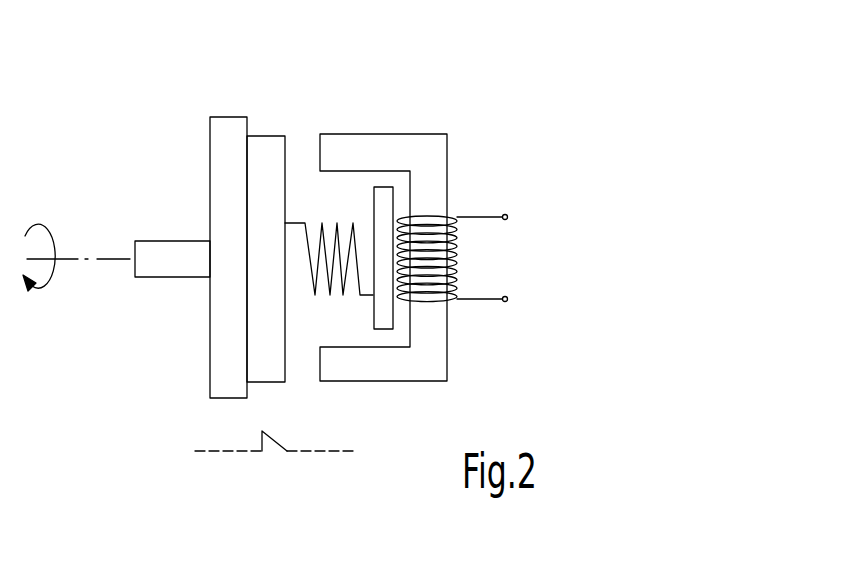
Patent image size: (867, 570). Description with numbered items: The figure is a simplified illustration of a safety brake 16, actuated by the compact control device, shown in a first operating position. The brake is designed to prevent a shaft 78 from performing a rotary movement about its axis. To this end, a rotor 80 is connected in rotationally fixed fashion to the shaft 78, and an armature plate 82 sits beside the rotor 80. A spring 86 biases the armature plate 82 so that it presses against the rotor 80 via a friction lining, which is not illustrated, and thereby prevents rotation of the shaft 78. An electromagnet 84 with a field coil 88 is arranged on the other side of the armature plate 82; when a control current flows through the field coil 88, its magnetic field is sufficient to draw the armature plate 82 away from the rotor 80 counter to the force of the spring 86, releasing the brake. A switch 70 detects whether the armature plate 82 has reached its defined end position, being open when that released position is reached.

The safety brake 16 is at (540, 137).
The switch 70 is at (265, 453).
The shaft 78 is at (148, 278).
The rotor 80 is at (217, 158).
The armature plate 82 is at (263, 135).
The electromagnet 84 is at (437, 335).
The spring 86 is at (320, 294).
The field coil 88 is at (457, 265).